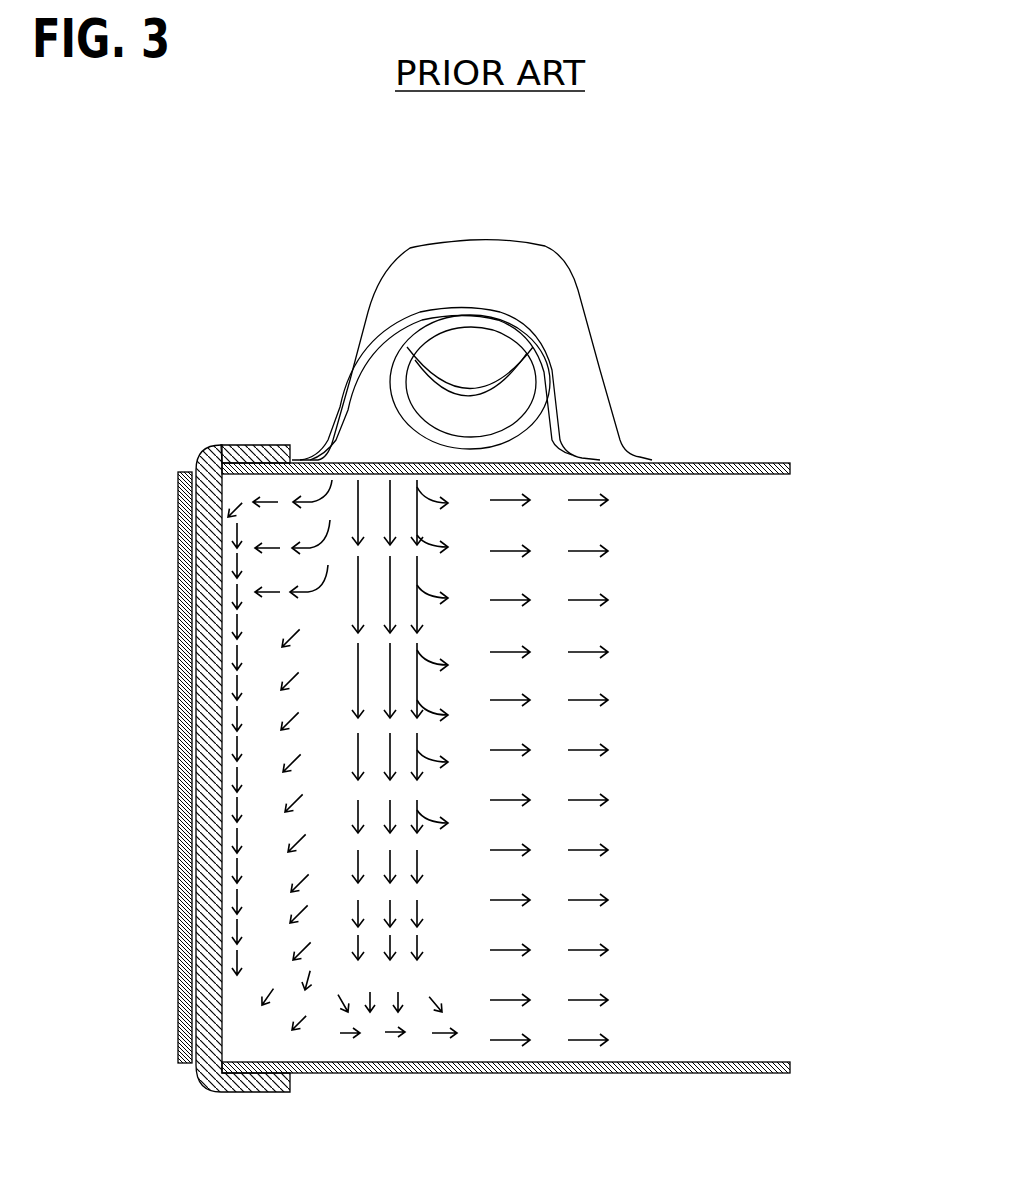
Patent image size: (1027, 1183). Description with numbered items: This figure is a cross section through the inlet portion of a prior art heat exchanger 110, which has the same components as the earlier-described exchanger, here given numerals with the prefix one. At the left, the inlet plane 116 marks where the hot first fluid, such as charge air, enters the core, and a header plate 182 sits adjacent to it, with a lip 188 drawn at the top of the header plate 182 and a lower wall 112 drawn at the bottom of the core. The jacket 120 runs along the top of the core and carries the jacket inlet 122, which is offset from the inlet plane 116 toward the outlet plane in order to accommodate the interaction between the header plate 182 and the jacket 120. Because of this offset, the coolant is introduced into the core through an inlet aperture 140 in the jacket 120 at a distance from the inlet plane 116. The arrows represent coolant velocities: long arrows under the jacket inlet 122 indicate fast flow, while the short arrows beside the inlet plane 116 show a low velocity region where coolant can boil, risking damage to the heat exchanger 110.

The prior art heat exchanger 110 is at (792, 223).
The bottom plate 112 is at (650, 1006).
The inlet plane 116 is at (169, 529).
The jacket 120 is at (713, 456).
The jacket inlet 122 is at (532, 222).
The inlet aperture 140 is at (344, 477).
The header plate 182 is at (202, 462).
The flange 188 is at (262, 462).